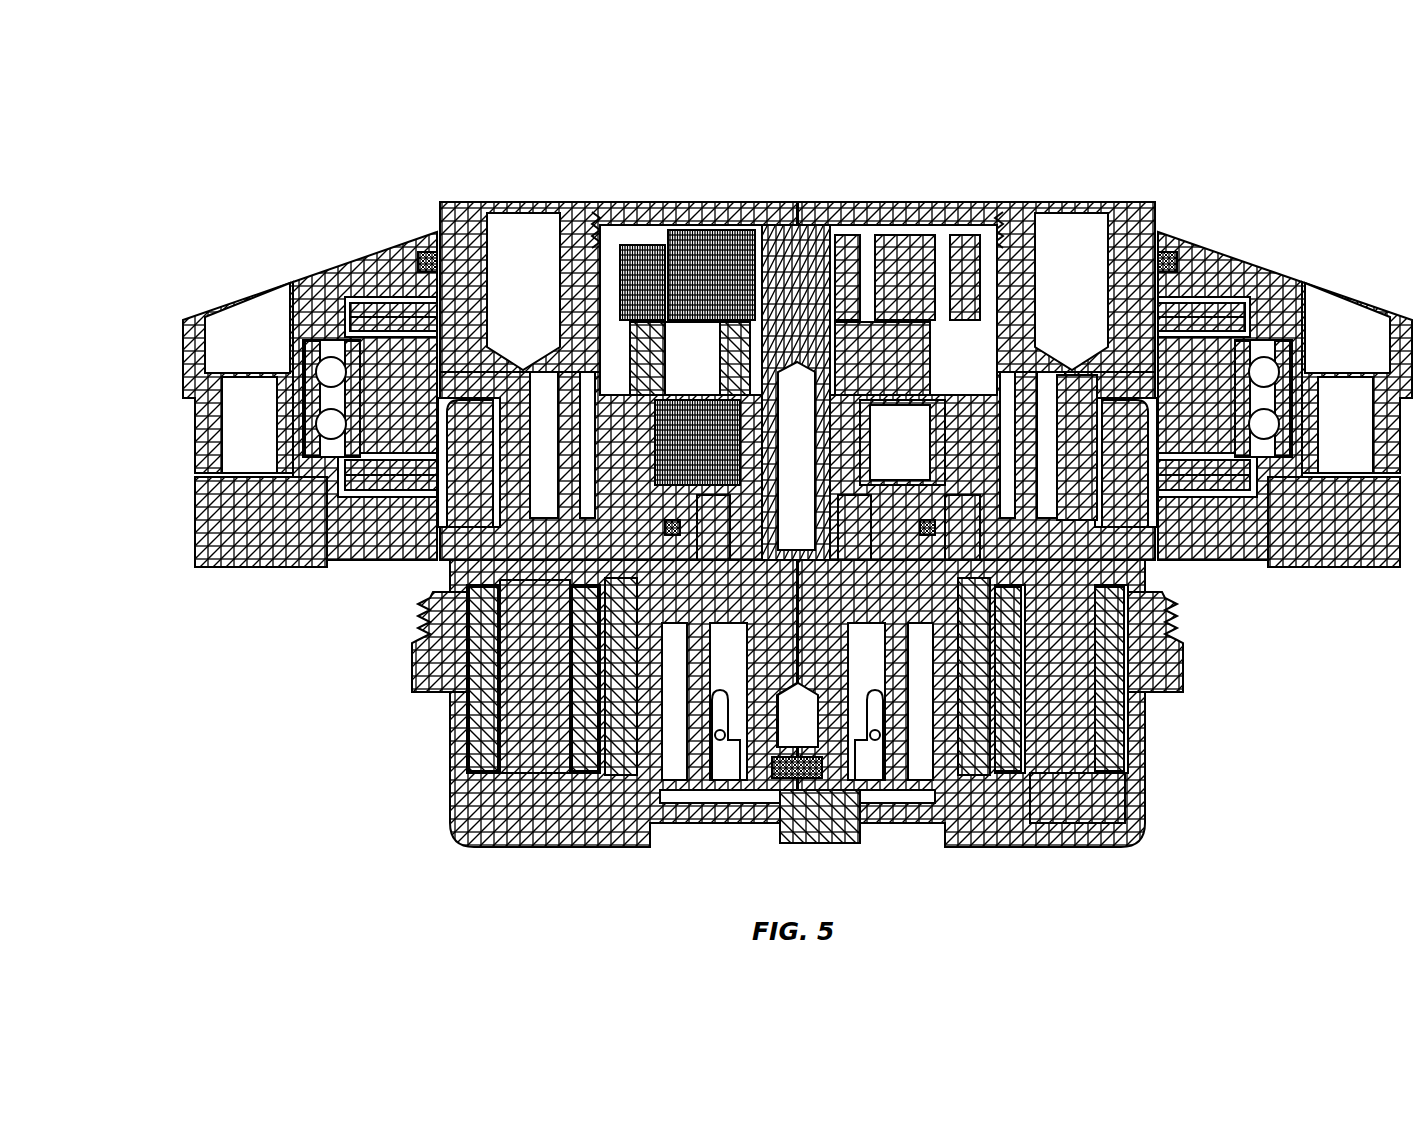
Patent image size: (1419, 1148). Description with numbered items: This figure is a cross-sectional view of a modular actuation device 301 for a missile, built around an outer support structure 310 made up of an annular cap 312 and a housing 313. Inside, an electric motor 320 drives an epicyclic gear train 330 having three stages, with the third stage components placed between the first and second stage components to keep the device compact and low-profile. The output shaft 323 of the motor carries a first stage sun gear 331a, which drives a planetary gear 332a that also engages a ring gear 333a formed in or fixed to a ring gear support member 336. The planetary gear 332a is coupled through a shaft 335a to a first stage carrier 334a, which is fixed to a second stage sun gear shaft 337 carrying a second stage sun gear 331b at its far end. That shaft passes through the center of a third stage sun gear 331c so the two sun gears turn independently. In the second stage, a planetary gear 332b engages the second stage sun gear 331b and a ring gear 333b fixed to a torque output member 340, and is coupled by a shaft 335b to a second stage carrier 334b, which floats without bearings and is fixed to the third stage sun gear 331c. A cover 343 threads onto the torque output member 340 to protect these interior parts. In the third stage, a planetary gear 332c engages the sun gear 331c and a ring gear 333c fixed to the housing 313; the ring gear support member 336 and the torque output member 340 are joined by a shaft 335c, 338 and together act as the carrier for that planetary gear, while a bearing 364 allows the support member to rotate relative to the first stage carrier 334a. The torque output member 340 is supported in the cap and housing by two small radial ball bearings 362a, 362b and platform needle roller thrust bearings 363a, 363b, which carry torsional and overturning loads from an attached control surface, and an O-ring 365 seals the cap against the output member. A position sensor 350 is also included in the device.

The modular actuation device 301 is at (751, 493).
The outer support structure 310 is at (222, 262).
The annular cap 312 is at (340, 255).
The housing 313 is at (330, 560).
The electric motor 320 is at (1146, 743).
The output shaft 323 is at (762, 775).
The epicyclic gear train 330 is at (1108, 478).
The first stage sun gear 331a is at (855, 540).
The second stage sun gear 331b is at (812, 248).
The third stage sun gear 331c is at (465, 690).
The planetary gear 332a is at (575, 590).
The planetary gear 332b is at (968, 253).
The planetary gear 332c is at (1240, 320).
The ring gear 333a is at (1100, 470).
The ring gear 333b is at (642, 245).
The ring gear 333c is at (1160, 622).
The first stage carrier 334a is at (965, 520).
The second stage carrier 334b is at (1000, 290).
The shaft 335a is at (600, 610).
The shaft 335b is at (903, 248).
The shaft 335c is at (1190, 278).
The ring gear support member 336 is at (1140, 820).
The second stage sun gear shaft 337 is at (735, 520).
The shaft 338 is at (493, 530).
The torque output member 340 is at (1130, 205).
The cover 343 is at (940, 250).
The position sensor 350 is at (805, 843).
The radial ball bearing 362a is at (316, 380).
The radial ball bearing 362b is at (316, 428).
The platform needle roller thrust bearing 363a is at (385, 310).
The platform needle roller thrust bearing 363b is at (360, 476).
The bearing 364 is at (535, 760).
The O-ring 365 is at (428, 262).